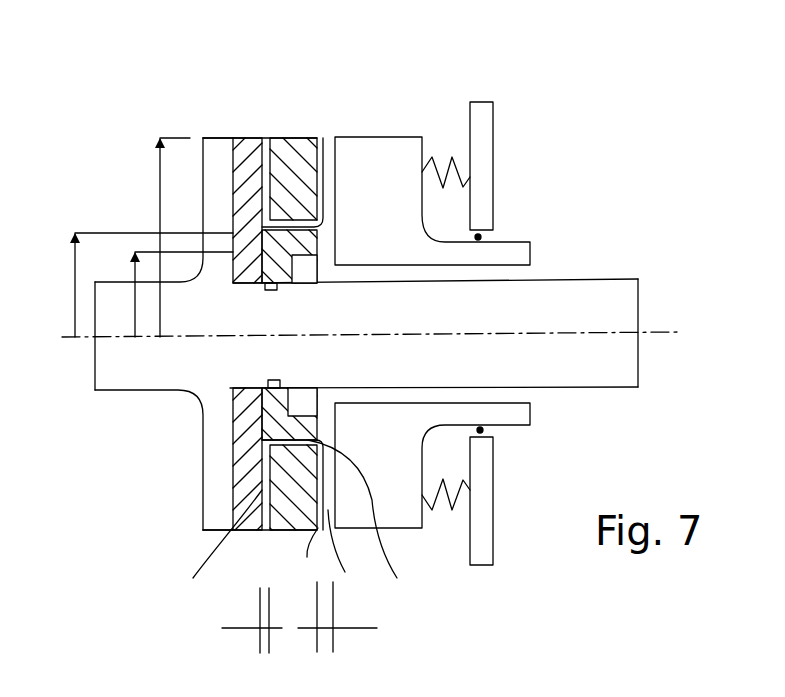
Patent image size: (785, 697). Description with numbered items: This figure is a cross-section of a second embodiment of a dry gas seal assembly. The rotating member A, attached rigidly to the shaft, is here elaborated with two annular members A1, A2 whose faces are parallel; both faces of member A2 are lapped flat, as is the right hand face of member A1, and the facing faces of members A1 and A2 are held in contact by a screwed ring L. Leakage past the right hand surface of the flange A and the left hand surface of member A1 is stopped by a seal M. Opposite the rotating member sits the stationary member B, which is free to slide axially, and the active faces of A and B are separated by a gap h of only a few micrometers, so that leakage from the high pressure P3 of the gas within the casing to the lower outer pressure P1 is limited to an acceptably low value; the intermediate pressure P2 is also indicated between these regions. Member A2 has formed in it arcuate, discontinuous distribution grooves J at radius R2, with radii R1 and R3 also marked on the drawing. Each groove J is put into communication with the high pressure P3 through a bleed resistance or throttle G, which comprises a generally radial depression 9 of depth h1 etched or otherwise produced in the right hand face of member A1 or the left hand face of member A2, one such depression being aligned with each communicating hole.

The rotating member A is at (212, 433).
The annular member A1 is at (240, 468).
The annular member A2 is at (290, 144).
The radial depression 9 is at (240, 500).
The seal M is at (271, 290).
The screwed ring L is at (308, 270).
The intermediate pressure chamber wall P2 is at (294, 206).
The bleed resistance G is at (265, 138).
The distribution grooves J is at (325, 142).
The stationary member B is at (403, 517).
The radius R1 is at (167, 294).
The radius R2 is at (127, 285).
The radius R3 is at (158, 237).
The gap h is at (337, 581).
The depth of depression h1 is at (237, 571).
The outer pressure P1 is at (618, 209).
The high pressure P3 is at (90, 66).